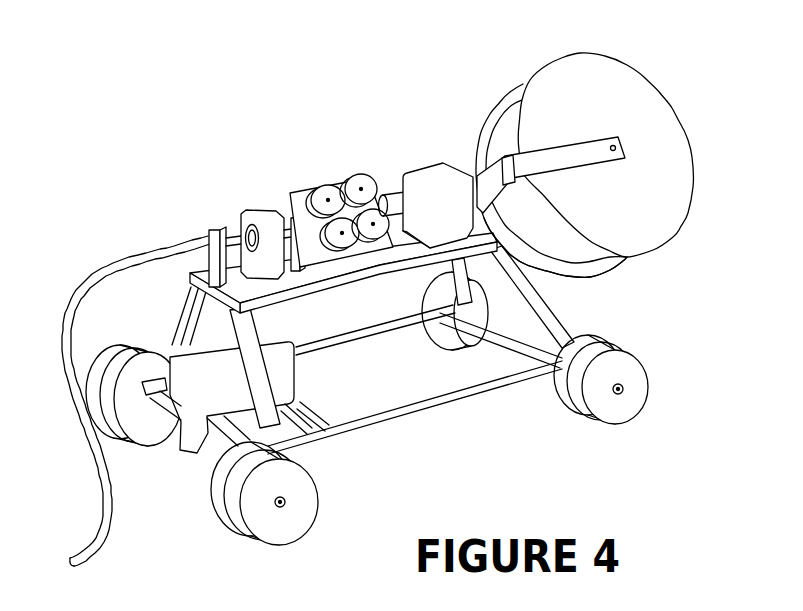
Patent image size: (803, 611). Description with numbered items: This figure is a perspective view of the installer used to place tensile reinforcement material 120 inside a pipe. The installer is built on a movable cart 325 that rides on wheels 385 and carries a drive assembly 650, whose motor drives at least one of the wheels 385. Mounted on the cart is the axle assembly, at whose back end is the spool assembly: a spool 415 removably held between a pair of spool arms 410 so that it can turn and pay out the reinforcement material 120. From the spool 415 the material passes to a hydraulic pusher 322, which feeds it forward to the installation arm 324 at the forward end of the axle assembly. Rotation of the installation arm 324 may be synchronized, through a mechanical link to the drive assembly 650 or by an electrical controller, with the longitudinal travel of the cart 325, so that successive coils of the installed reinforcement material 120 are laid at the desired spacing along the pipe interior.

The tensile reinforcement material 120 is at (570, 245).
The hydraulic pusher 322 is at (353, 178).
The installation arm 324 is at (103, 263).
The movable cart 325 is at (443, 403).
The wheels 385 is at (312, 492).
The spool arms 410 is at (585, 155).
The spool 415 is at (604, 115).
The drive assembly 650 is at (210, 398).